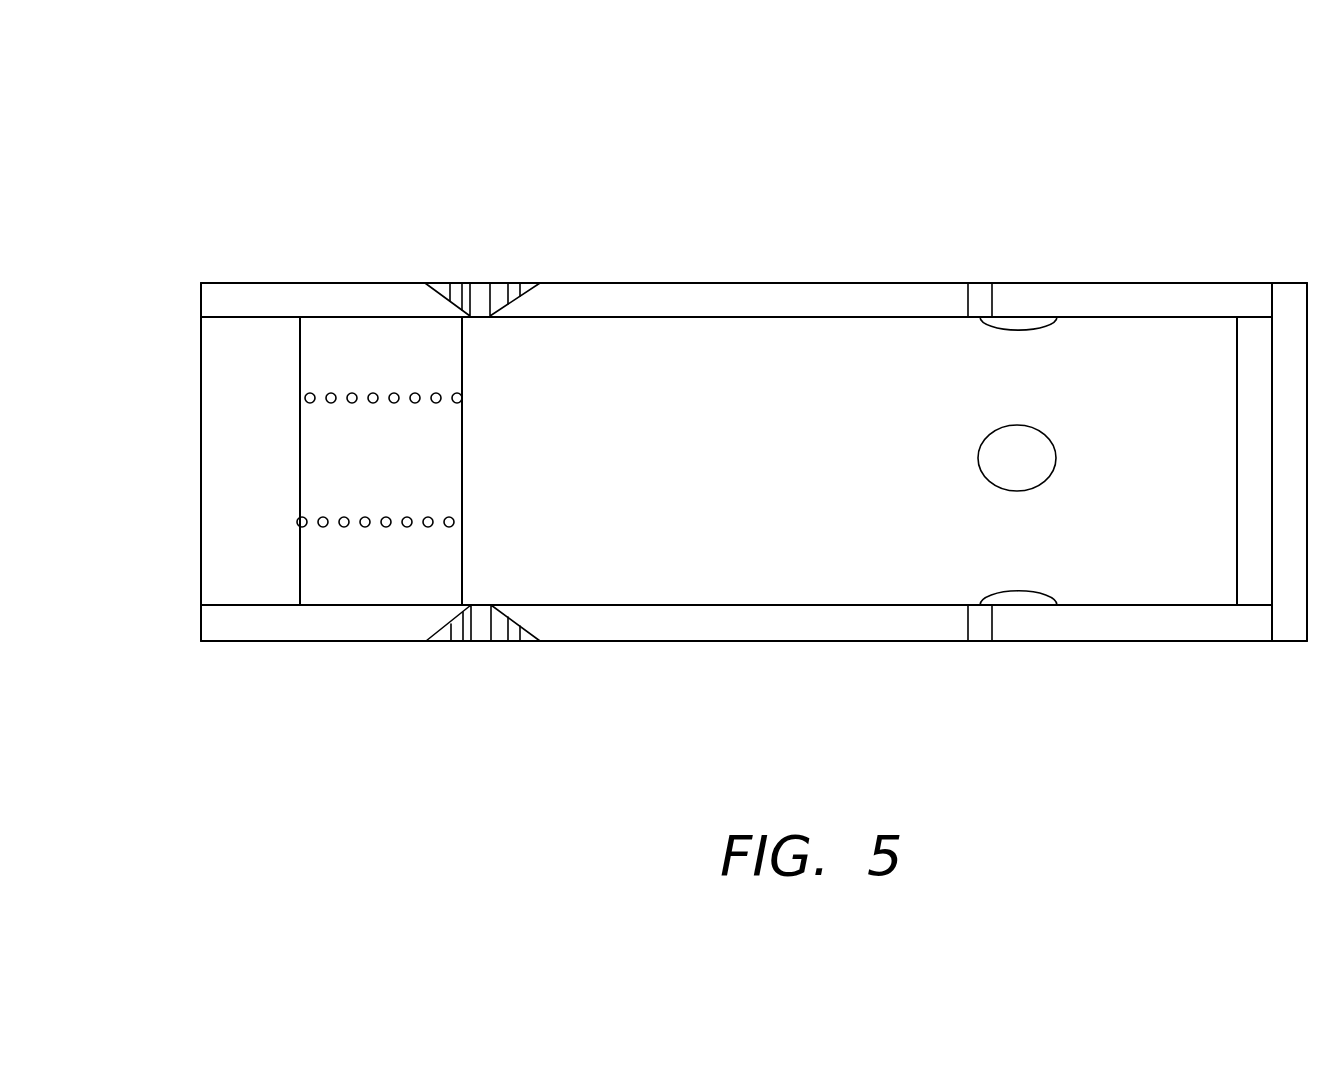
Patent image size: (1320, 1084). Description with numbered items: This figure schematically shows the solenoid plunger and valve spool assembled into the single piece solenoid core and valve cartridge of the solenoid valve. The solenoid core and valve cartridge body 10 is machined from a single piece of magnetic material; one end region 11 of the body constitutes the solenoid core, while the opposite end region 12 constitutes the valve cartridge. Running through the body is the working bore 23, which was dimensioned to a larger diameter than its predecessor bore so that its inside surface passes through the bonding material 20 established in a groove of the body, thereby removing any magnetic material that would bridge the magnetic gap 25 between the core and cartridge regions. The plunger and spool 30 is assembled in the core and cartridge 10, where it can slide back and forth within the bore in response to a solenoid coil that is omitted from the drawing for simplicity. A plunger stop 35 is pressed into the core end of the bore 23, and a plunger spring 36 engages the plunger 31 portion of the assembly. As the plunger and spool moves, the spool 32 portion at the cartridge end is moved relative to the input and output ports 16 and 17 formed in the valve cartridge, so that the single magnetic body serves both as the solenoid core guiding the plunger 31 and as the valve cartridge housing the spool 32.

The solenoid core and valve cartridge body 10 is at (816, 268).
The end region 11 is at (238, 236).
The end region 12 is at (1222, 266).
The input port 16 is at (980, 300).
The output port 17 is at (980, 622).
The bonding material 20 is at (475, 296).
The working bore 23 is at (390, 318).
The magnetic gap 25 is at (452, 571).
The plunger and spool 30 is at (777, 577).
The plunger 31 is at (572, 593).
The spool 32 is at (1162, 590).
The plunger stop 35 is at (263, 513).
The plunger spring 36 is at (350, 402).